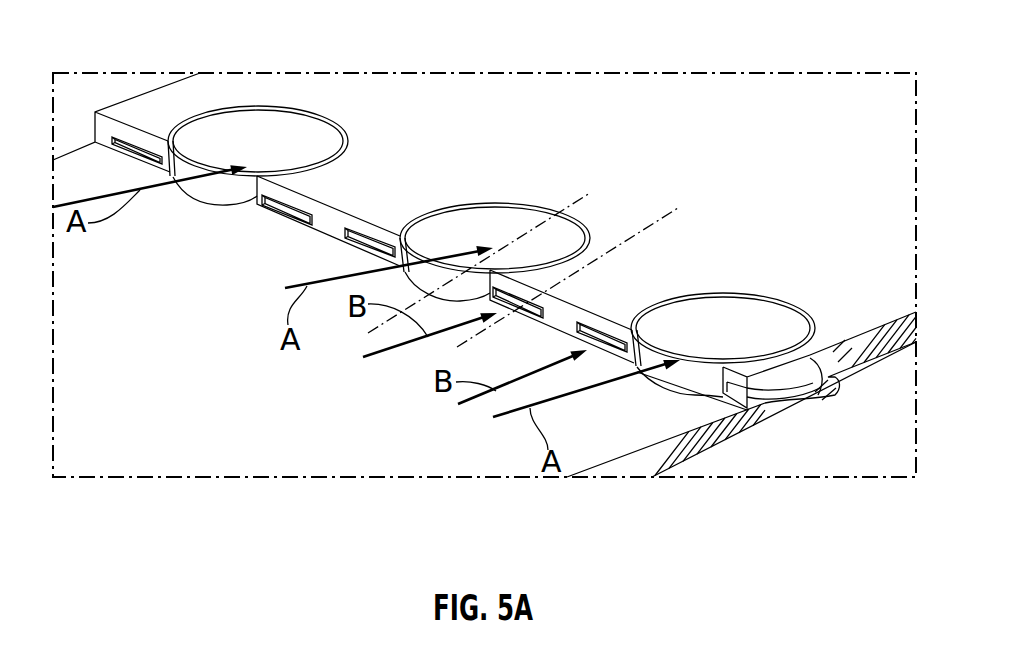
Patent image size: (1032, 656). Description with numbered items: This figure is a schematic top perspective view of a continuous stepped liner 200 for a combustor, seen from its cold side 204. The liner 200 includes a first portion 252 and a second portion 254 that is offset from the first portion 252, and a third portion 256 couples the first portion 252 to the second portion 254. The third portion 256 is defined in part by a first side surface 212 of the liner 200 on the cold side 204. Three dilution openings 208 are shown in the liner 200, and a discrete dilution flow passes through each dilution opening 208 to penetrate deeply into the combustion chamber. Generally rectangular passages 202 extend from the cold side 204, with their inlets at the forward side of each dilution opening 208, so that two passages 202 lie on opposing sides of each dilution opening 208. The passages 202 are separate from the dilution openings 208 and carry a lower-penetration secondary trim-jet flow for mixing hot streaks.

The liner 200 is at (130, 42).
The passage 202 is at (138, 156).
The cold side 204 is at (141, 401).
The dilution opening 208 is at (253, 150).
The first side surface 212 is at (577, 320).
The first portion 252 is at (302, 394).
The second portion 254 is at (582, 165).
The third portion 256 is at (624, 332).